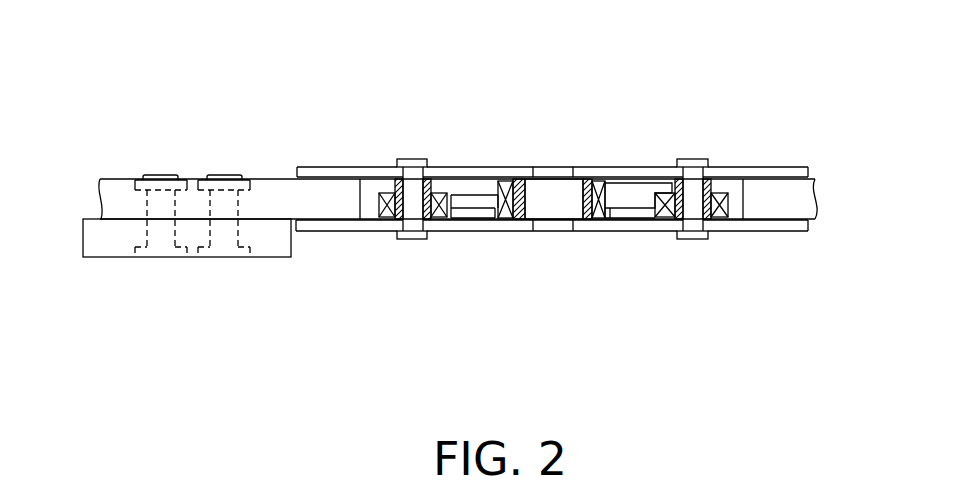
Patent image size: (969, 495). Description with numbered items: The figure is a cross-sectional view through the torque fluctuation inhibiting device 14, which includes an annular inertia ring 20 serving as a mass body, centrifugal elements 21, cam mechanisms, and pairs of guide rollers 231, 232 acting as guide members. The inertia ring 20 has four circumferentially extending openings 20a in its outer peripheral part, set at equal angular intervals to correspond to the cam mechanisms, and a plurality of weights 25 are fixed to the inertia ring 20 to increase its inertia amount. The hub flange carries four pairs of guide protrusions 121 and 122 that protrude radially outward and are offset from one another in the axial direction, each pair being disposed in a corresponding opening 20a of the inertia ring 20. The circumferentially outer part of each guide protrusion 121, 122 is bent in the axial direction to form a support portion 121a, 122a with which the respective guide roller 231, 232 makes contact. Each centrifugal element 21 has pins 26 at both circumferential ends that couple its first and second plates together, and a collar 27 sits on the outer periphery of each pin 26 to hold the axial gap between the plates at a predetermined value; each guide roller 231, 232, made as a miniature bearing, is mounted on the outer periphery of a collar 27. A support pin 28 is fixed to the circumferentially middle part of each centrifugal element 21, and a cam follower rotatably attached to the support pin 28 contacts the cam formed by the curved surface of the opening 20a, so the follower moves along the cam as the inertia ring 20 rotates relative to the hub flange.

The torque fluctuation inhibiting device 14 is at (660, 134).
The inertia ring 20 is at (263, 197).
The opening 20a is at (483, 180).
The centrifugal element 21 is at (342, 165).
The guide roller 231 is at (758, 168).
The guide roller 232 is at (376, 222).
The weight 25 is at (194, 252).
The pin 26 is at (413, 240).
The collar 27 is at (390, 178).
The support pin 28 is at (557, 210).
The guide protrusion 121 is at (630, 212).
The support portion 121a is at (638, 180).
The guide protrusion 122 is at (473, 213).
The support portion 122a is at (461, 175).